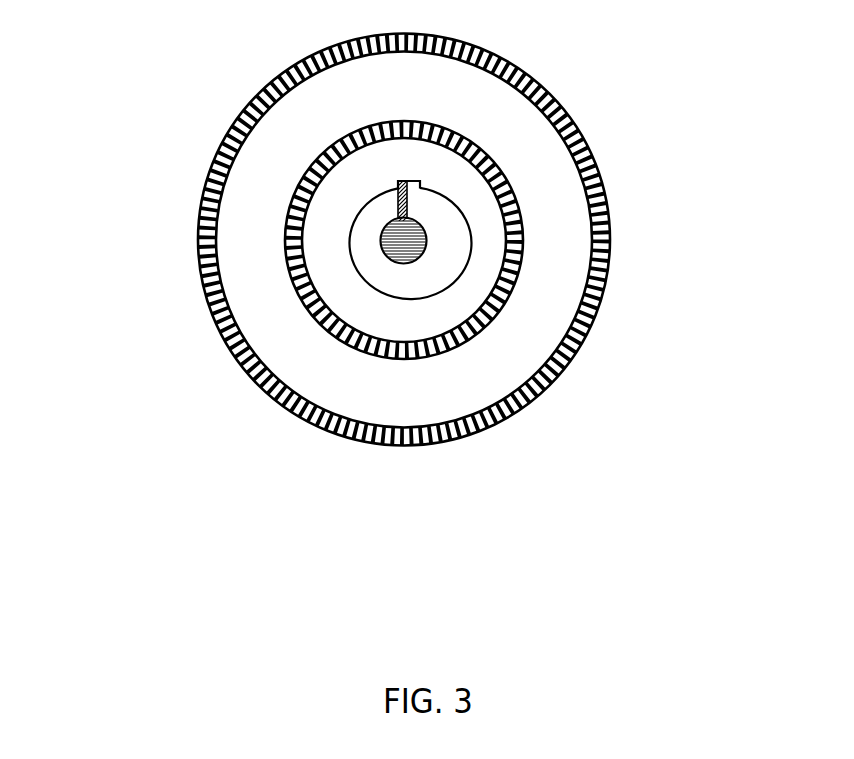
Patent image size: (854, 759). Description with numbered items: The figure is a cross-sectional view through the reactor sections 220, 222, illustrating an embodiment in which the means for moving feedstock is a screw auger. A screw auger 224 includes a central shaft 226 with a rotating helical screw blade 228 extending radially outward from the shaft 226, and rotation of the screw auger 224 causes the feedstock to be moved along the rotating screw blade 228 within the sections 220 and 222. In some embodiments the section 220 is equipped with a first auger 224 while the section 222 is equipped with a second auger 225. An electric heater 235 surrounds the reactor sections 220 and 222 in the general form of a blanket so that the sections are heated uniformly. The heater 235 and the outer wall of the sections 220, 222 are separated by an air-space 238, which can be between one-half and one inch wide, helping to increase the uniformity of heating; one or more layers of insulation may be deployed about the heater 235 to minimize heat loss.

The reactor section 220 is at (270, 240).
The reactor section 222 is at (285, 231).
The screw auger 224 is at (549, 113).
The second auger 225 is at (433, 203).
The central shaft 226 is at (427, 240).
The rotating helical screw blade 228 is at (433, 273).
The electric heater 235 is at (397, 450).
The air-space 238 is at (535, 335).